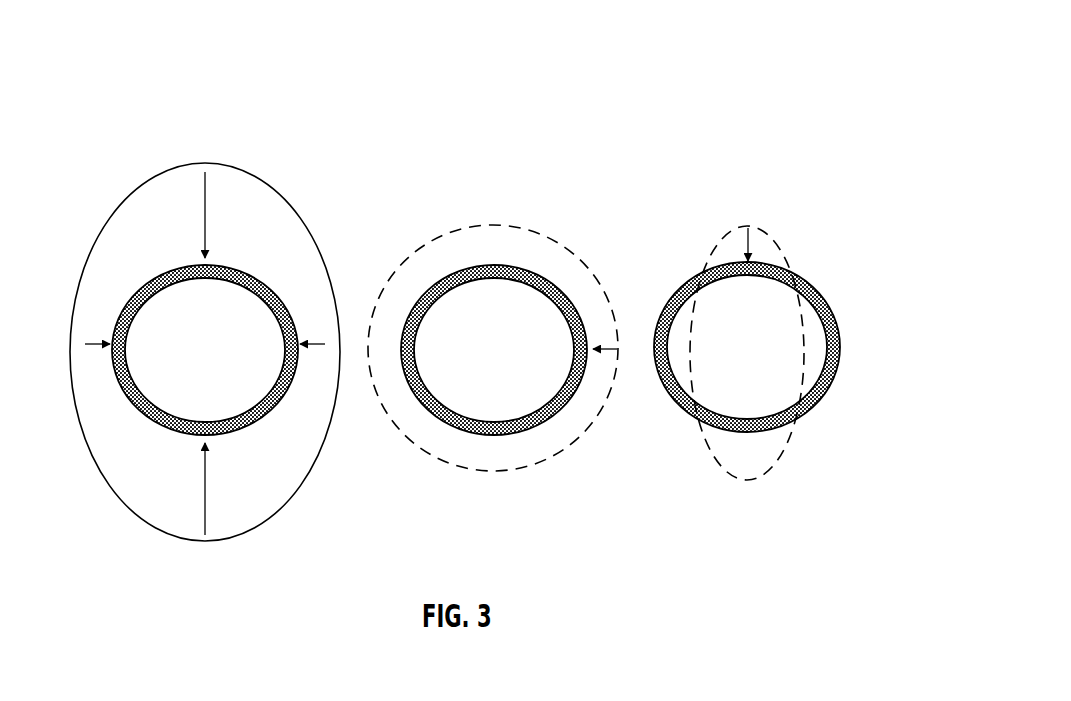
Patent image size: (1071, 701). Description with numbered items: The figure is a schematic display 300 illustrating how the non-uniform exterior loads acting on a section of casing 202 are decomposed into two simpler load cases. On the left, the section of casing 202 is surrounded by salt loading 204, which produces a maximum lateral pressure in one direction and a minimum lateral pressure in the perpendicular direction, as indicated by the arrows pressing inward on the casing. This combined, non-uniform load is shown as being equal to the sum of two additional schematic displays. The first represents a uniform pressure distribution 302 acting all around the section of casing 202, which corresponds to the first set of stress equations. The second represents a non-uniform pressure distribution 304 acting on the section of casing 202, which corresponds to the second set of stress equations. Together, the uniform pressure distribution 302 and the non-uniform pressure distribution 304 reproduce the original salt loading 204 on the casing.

The schematic display 300 is at (162, 58).
The section of casing 202 is at (197, 264).
The salt loading 204 is at (142, 186).
The uniform pressure distribution 302 is at (562, 249).
The non-uniform pressure distribution 304 is at (766, 234).